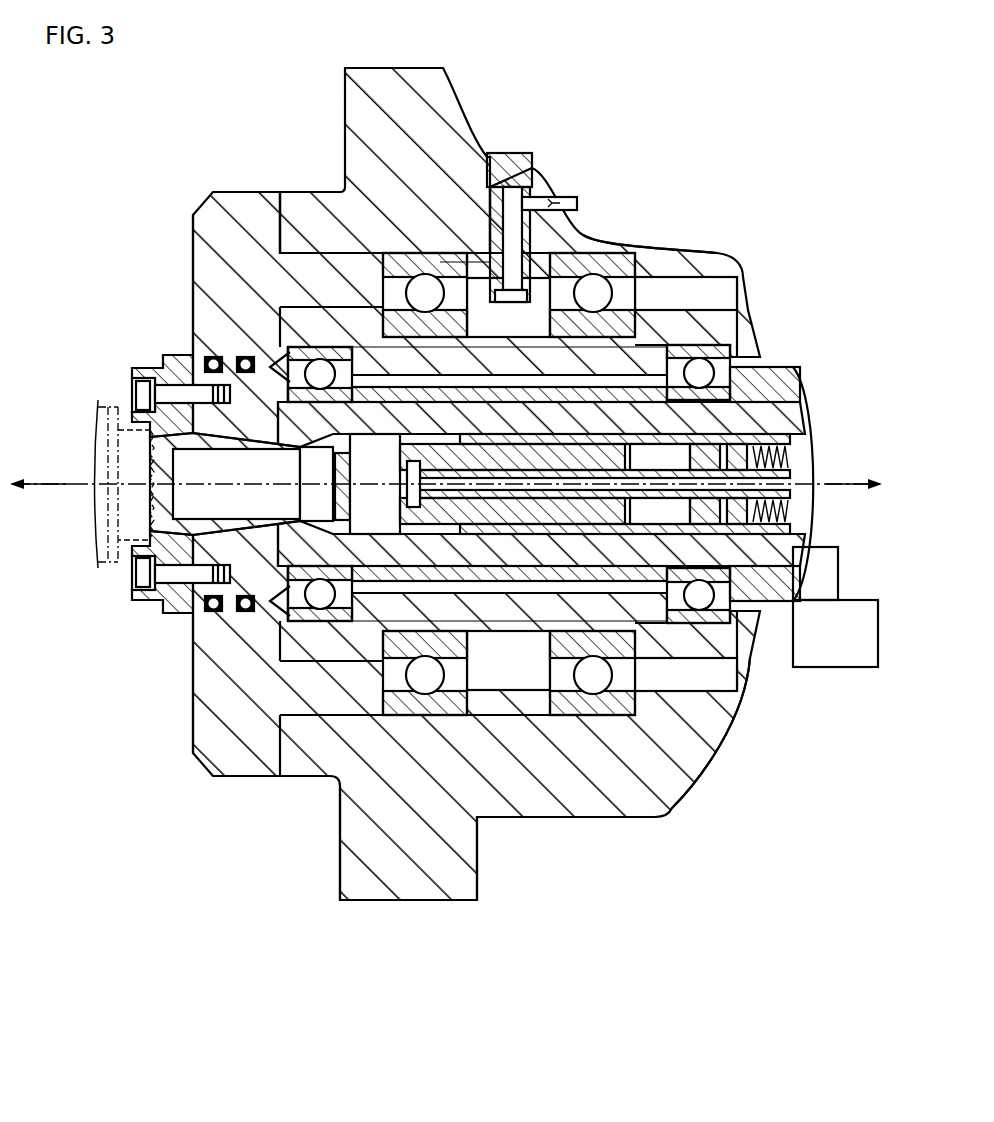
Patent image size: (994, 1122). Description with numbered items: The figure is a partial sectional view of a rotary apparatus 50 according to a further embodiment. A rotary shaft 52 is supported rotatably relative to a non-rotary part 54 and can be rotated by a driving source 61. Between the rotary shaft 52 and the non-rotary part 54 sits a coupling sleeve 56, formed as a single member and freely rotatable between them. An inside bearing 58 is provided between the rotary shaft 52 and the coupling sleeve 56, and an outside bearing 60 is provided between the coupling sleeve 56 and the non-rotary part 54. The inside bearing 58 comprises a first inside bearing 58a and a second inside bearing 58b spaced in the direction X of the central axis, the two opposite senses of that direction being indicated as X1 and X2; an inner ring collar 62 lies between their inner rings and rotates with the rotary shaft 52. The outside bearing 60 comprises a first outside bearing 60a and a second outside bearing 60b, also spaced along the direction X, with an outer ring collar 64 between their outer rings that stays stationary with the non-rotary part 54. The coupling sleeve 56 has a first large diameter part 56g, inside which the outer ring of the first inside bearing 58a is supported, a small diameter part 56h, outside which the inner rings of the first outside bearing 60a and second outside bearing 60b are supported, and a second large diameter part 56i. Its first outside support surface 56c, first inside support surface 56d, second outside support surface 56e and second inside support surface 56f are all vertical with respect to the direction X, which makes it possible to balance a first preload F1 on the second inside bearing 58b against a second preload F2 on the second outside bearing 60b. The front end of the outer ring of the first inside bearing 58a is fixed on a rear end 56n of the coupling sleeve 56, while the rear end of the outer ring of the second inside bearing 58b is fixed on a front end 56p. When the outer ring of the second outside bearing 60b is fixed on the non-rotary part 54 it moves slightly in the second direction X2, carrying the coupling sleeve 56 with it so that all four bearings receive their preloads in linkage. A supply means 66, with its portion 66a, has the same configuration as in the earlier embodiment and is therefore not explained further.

The rotary apparatus 50 is at (501, 492).
The rotary shaft 52 is at (171, 347).
The non-rotary part 54 is at (354, 96).
The coupling sleeve 56 is at (704, 300).
The first outside support surface 56c is at (690, 315).
The first inside support surface 56d is at (708, 297).
The second outside support surface 56e is at (348, 320).
The second inside support surface 56f is at (293, 350).
The first large diameter part 56g is at (700, 296).
The small diameter part 56h is at (625, 318).
The second large diameter part 56i is at (300, 250).
The rear end of the coupling sleeve 56n is at (725, 310).
The front end of the coupling sleeve 56p is at (193, 252).
The inside bearing 58 is at (760, 352).
The first inside bearing 58a is at (743, 348).
The second inside bearing 58b is at (250, 353).
The outside bearing 60 is at (609, 235).
The first outside bearing 60a is at (597, 260).
The second outside bearing 60b is at (408, 263).
The driving source 61 is at (838, 668).
The inner ring collar 62 is at (472, 400).
The outer ring collar 64 is at (509, 498).
The supply means 66 is at (511, 150).
The pin 66a is at (556, 205).
The first preload F1 is at (358, 360).
The second preload F2 is at (438, 262).
The direction of the central axis X is at (85, 490).
The axial direction X1 is at (847, 480).
The second direction X2 is at (49, 482).